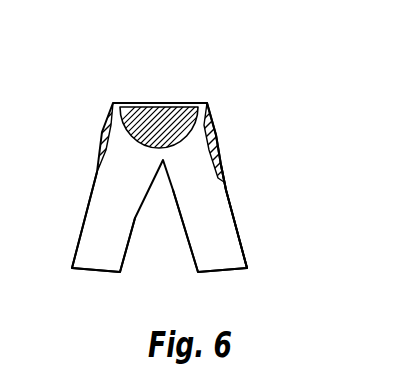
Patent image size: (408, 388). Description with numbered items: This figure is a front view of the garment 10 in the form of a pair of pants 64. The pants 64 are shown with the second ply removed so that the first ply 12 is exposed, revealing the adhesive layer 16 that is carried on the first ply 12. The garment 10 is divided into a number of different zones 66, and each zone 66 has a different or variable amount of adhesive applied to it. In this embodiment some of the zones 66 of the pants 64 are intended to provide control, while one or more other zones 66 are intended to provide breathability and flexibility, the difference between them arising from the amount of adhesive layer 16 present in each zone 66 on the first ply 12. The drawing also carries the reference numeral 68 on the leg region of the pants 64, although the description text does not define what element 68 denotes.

The garment 10 is at (267, 86).
The first ply 12 is at (96, 259).
The adhesive layer 16 is at (161, 101).
The pants 64 is at (229, 180).
The zones 66 is at (96, 150).
The leg panel 68 is at (217, 218).